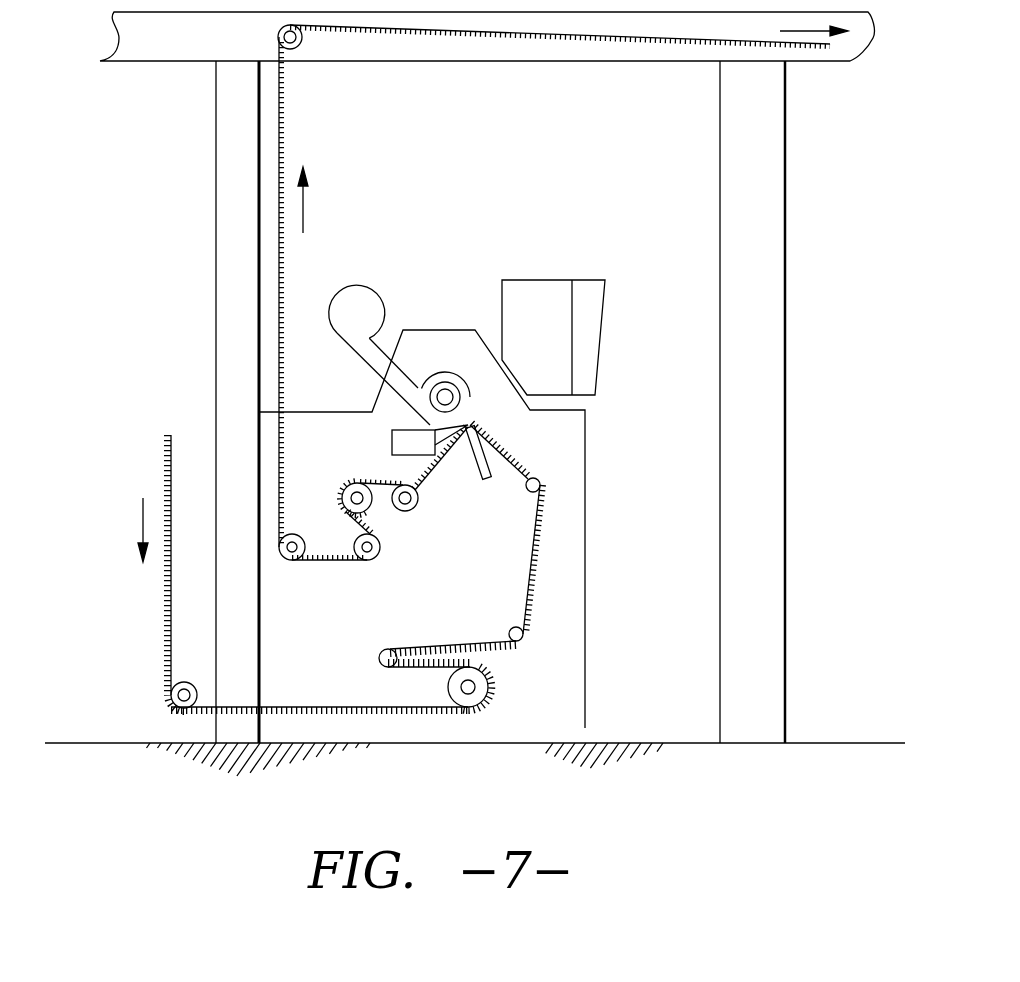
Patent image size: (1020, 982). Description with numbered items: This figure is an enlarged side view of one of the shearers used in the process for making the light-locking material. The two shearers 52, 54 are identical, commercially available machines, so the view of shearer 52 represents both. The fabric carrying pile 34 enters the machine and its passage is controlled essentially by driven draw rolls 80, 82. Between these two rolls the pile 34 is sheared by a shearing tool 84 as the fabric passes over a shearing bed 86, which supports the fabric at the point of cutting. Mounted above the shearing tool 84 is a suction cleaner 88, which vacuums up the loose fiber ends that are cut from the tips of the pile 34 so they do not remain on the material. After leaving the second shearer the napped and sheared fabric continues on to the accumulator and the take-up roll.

The pile 34 is at (543, 532).
The shearer 52 is at (174, 311).
The shearer 54 is at (752, 402).
The driven draw roll 80 is at (487, 697).
The driven draw roll 82 is at (357, 490).
The shearing tool 84 is at (403, 443).
The shearing bed 86 is at (477, 468).
The suction cleaner 88 is at (367, 293).